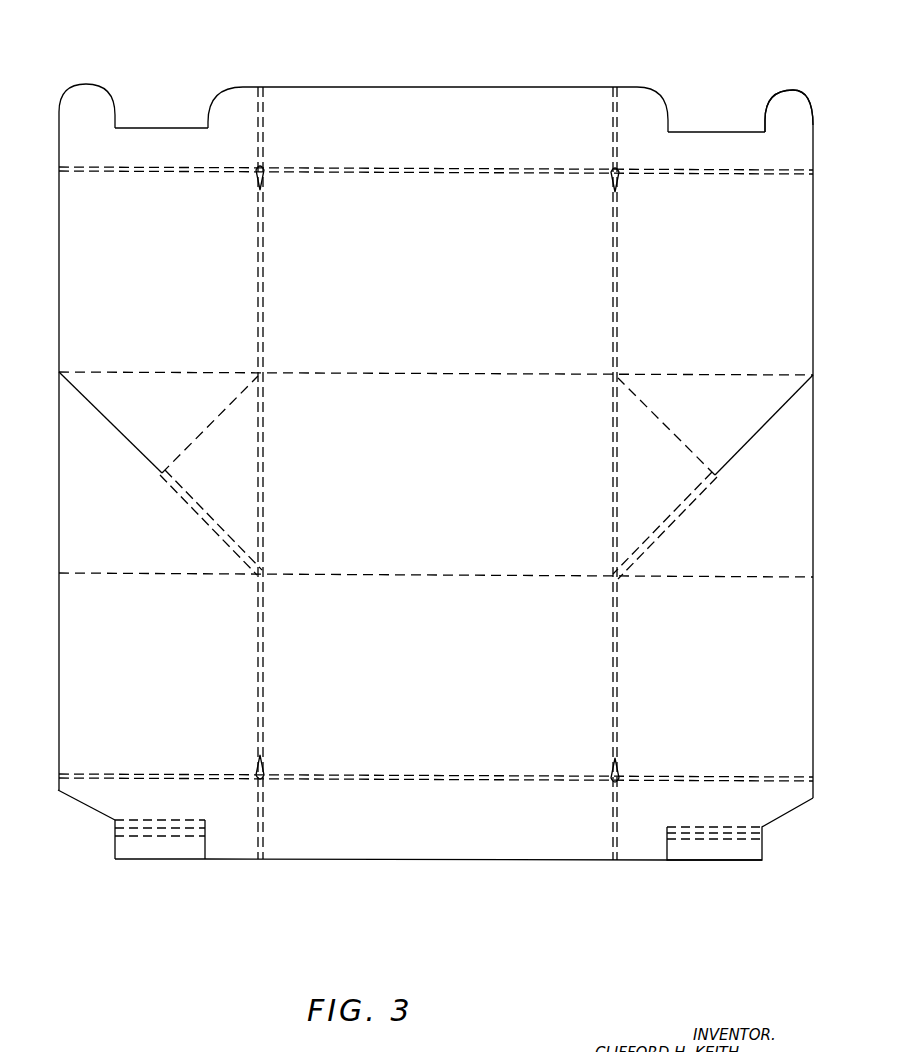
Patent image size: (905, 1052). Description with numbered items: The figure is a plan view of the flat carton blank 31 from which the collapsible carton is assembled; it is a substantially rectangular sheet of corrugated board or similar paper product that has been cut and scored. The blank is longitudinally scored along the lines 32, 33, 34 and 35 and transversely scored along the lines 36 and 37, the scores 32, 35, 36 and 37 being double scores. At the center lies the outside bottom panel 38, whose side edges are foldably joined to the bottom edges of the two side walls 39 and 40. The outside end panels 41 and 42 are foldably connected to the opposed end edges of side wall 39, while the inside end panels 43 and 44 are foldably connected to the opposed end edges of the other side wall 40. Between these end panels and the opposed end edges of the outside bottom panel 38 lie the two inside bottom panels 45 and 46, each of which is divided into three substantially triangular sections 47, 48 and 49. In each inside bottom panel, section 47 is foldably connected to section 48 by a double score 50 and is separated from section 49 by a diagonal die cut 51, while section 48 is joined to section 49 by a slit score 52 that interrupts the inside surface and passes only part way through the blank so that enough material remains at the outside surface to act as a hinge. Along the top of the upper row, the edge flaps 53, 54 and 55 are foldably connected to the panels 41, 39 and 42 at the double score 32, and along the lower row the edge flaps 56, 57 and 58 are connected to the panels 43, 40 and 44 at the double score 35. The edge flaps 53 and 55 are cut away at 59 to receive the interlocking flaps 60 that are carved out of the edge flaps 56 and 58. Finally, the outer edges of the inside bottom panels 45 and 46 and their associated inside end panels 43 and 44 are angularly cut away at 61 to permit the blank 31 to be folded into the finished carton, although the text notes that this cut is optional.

The carton blank 31 is at (807, 84).
The longitudinal double score 32 is at (92, 172).
The longitudinal score 33 is at (100, 372).
The longitudinal score 34 is at (125, 575).
The longitudinal double score 35 is at (108, 778).
The transverse double score 36 is at (262, 817).
The transverse double score 37 is at (610, 843).
The outside bottom panel 38 is at (396, 470).
The side wall 39 is at (388, 280).
The side wall 40 is at (409, 709).
The outside end panel 41 is at (132, 279).
The outside end panel 42 is at (695, 282).
The inside end panel 43 is at (133, 709).
The inside end panel 44 is at (697, 712).
The inside bottom panel 45 is at (57, 503).
The inside bottom panel 46 is at (820, 492).
The triangular section 47 is at (102, 552).
The triangular section 48 is at (192, 477).
The triangular section 49 is at (141, 412).
The double score 50 is at (215, 528).
The diagonal die cut 51 is at (132, 447).
The slit score 52 is at (215, 420).
The edge flap 53 is at (240, 123).
The edge flap 54 is at (403, 117).
The edge flap 55 is at (783, 120).
The edge flap 56 is at (243, 837).
The edge flap 57 is at (412, 845).
The edge flap 58 is at (647, 847).
The cut away 59 is at (155, 98).
The interlocking flap 60 is at (168, 847).
The angular cut away 61 is at (817, 584).